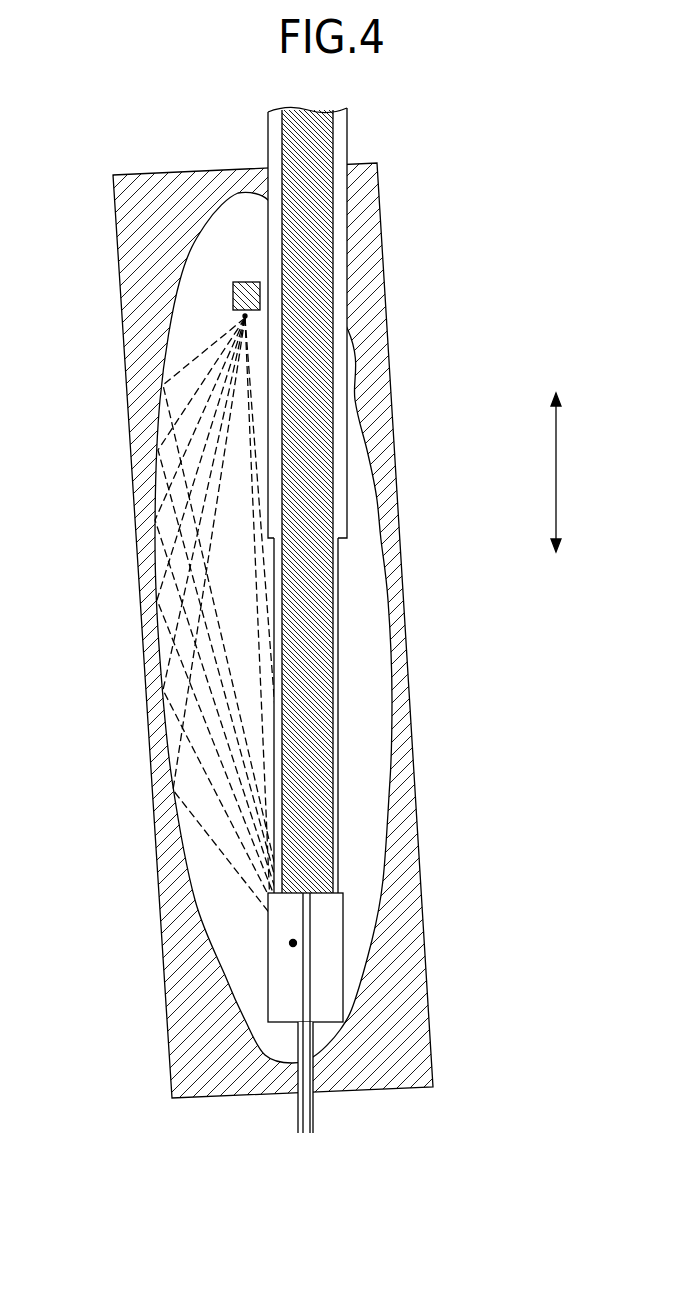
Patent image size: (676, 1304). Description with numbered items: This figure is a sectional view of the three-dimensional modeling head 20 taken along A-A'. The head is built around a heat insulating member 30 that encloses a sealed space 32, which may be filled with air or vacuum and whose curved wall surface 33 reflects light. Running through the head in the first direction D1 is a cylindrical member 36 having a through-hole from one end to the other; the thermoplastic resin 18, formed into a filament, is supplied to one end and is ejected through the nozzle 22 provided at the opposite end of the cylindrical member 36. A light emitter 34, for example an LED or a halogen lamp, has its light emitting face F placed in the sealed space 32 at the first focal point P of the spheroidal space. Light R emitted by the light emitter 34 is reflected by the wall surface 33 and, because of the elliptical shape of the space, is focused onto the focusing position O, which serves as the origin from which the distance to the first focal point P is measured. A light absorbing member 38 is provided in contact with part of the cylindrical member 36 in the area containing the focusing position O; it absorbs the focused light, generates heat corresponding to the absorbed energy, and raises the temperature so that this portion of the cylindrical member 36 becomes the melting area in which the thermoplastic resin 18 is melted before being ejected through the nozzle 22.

The three-dimensional modeling head 20 is at (568, 193).
The heat insulating member 30 is at (387, 322).
The curved wall surface 33 is at (147, 640).
The light R is at (140, 518).
The sealed space 32 is at (402, 528).
The cylindrical member 36 is at (338, 620).
The thermoplastic resin 18 is at (336, 688).
The light absorbing member 38 is at (325, 960).
The nozzle 22 is at (316, 1110).
The light emitter 34 is at (232, 289).
The first focal point P is at (243, 317).
The light emitting face F is at (264, 290).
The focusing position O is at (293, 943).
The first direction D1 is at (558, 466).